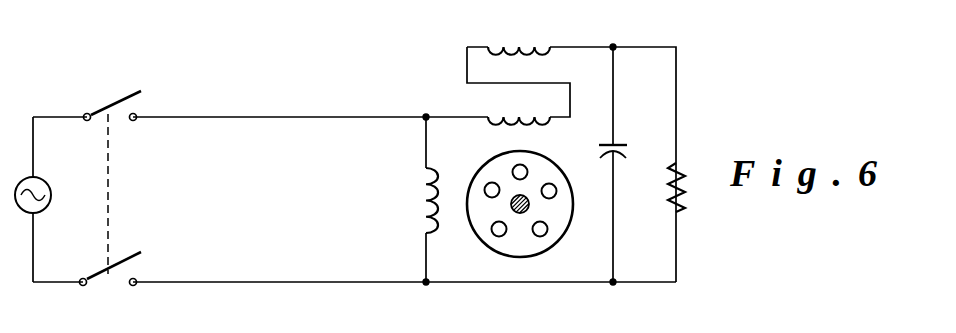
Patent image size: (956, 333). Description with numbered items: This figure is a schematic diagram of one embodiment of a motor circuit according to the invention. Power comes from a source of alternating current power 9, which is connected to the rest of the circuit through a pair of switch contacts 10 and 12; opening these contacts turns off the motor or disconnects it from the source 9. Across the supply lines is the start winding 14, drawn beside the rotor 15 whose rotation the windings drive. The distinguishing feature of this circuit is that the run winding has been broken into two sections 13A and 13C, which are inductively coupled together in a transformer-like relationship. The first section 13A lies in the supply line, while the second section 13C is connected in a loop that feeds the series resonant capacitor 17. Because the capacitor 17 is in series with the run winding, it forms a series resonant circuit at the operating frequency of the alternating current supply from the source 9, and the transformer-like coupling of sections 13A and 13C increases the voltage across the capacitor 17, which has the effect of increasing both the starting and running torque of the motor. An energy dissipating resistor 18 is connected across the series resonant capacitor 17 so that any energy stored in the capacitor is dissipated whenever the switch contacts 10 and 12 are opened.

The source of alternating current power 9 is at (26, 210).
The switch contact 10 is at (98, 106).
The switch contact 12 is at (101, 268).
The run winding section 13A is at (540, 99).
The run winding section 13C is at (522, 47).
The start winding 14 is at (425, 195).
The rotor 15 is at (564, 232).
The series resonant capacitor 17 is at (643, 135).
The energy dissipating resistor 18 is at (679, 167).